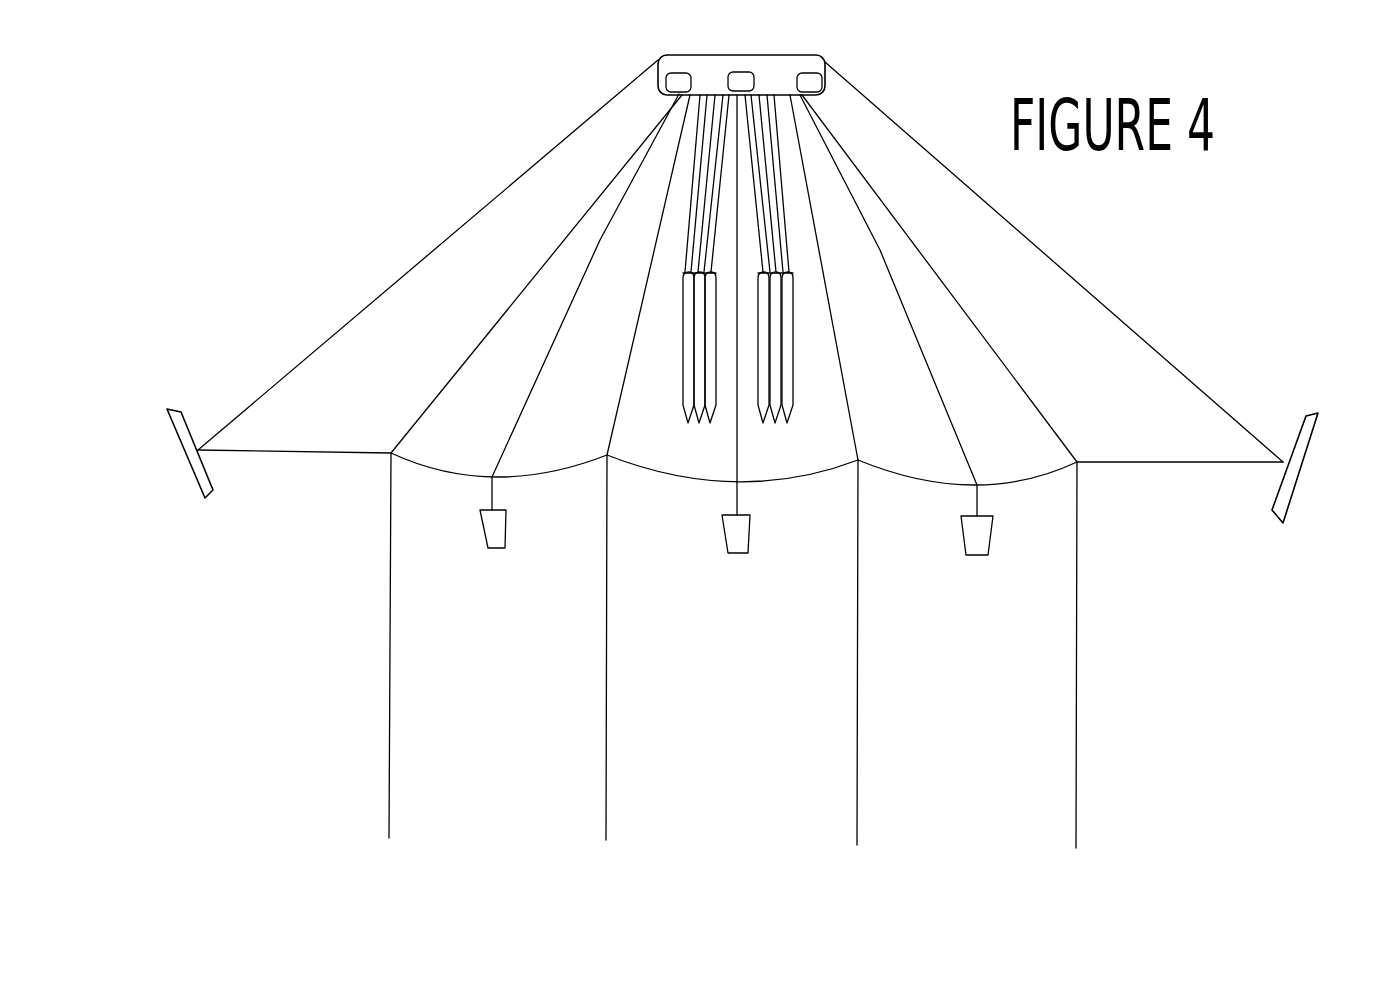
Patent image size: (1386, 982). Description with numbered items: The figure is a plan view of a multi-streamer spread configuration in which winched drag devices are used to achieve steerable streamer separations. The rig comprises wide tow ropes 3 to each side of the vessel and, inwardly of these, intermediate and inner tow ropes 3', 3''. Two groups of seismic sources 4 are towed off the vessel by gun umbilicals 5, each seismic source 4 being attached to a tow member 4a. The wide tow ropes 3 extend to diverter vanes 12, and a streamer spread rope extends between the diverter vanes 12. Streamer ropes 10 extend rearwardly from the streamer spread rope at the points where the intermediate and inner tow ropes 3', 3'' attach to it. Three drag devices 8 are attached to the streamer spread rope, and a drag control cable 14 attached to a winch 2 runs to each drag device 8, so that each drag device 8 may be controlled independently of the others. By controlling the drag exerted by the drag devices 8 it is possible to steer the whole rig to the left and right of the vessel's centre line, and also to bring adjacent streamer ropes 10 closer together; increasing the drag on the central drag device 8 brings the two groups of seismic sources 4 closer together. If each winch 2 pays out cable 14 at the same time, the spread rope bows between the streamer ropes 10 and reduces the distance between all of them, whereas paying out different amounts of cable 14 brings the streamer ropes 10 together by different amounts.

The winch 2 is at (658, 77).
The wide tow rope 3 is at (740, 261).
The intermediate tow rope 3' is at (734, 278).
The inner tow rope 3'' is at (739, 277).
The seismic source 4 is at (738, 363).
The tow member 4a is at (690, 271).
The gun umbilical 5 is at (710, 141).
The drag device 8 is at (507, 530).
The streamer rope 10 is at (392, 690).
The diverter vane 12 is at (200, 490).
The drag control cable 14 is at (537, 397).